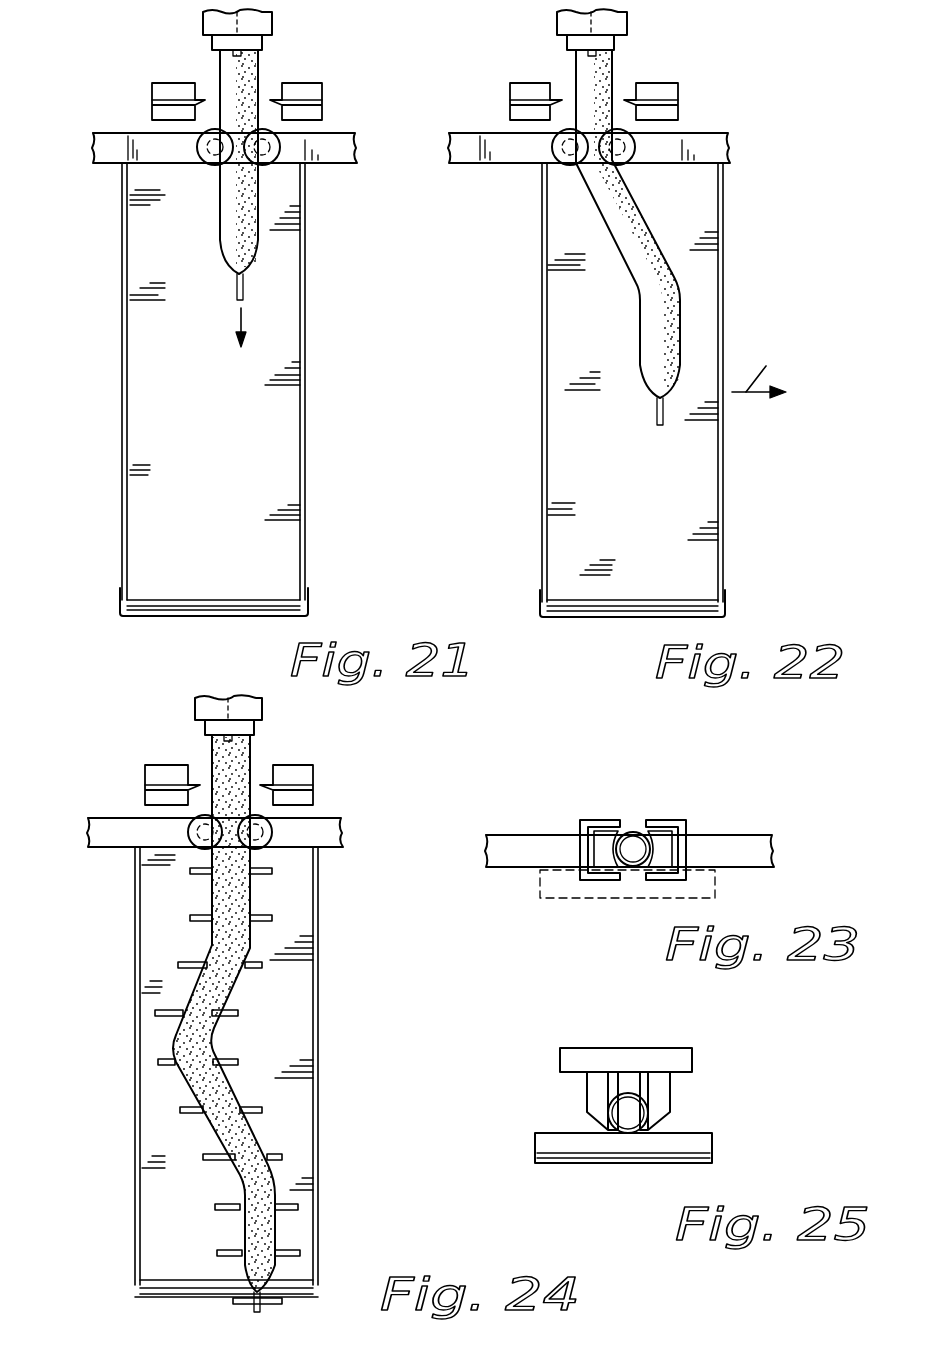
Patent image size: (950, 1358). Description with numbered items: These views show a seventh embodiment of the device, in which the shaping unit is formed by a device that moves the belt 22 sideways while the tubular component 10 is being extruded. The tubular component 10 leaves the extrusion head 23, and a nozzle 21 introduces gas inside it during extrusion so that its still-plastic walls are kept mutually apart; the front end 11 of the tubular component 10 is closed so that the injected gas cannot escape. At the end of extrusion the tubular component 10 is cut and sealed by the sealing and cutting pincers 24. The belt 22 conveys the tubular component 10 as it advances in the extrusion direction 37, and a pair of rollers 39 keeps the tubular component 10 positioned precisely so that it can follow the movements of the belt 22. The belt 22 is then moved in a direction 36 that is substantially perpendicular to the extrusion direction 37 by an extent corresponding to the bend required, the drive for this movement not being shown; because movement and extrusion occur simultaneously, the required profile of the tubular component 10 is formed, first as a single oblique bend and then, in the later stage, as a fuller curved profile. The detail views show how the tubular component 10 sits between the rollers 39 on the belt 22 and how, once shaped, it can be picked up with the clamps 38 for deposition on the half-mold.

In FIG. 21, the tubular component 10 is at (250, 237).
In FIG. 22, the tubular component 10 is at (632, 270).
In FIG. 24, the tubular component 10 is at (230, 992).
In FIG. 23, the tubular component 10 is at (633, 833).
In FIG. 25, the tubular component 10 is at (615, 1110).
In FIG. 21, the end of the tubular component 11 is at (235, 293).
In FIG. 22, the end of the tubular component 11 is at (653, 422).
In FIG. 21, the nozzle 21 is at (206, 41).
In FIG. 22, the nozzle 21 is at (562, 41).
In FIG. 24, the nozzle 21 is at (228, 710).
In FIG. 21, the belt 22 is at (275, 407).
In FIG. 22, the belt 22 is at (712, 283).
In FIG. 24, the belt 22 is at (226, 1072).
In FIG. 23, the belt 22 is at (708, 888).
In FIG. 25, the belt 22 is at (555, 1158).
In FIG. 21, the extrusion head 23 is at (272, 22).
In FIG. 22, the extrusion head 23 is at (627, 22).
In FIG. 24, the extrusion head 23 is at (205, 708).
In FIG. 21, the sealing and cutting pincers 24 is at (168, 90).
In FIG. 22, the sealing and cutting pincers 24 is at (520, 88).
In FIG. 24, the sealing and cutting pincers 24 is at (165, 775).
In FIG. 22, the direction of belt movement 36 is at (765, 358).
In FIG. 21, the direction of extrusion 37 is at (245, 315).
In FIG. 24, the clamps 38 is at (262, 968).
In FIG. 25, the clamps 38 is at (665, 1092).
In FIG. 21, the rollers 39 is at (211, 165).
In FIG. 22, the rollers 39 is at (565, 165).
In FIG. 24, the rollers 39 is at (200, 848).
In FIG. 23, the rollers 39 is at (610, 830).